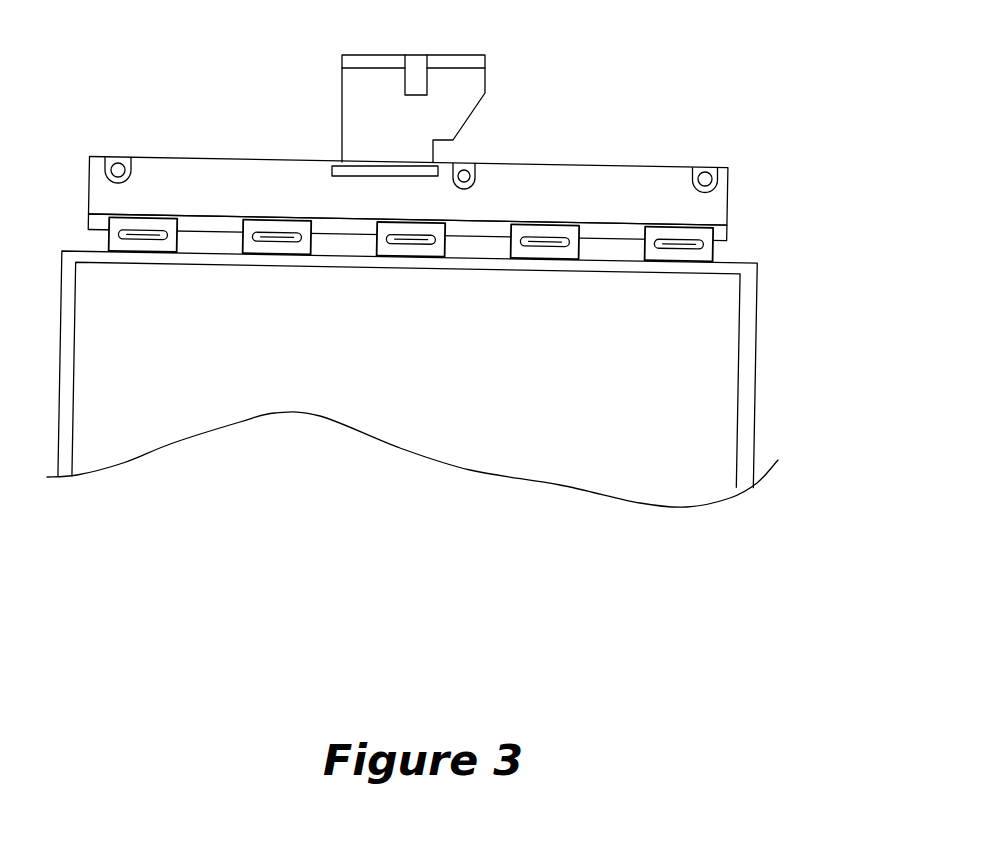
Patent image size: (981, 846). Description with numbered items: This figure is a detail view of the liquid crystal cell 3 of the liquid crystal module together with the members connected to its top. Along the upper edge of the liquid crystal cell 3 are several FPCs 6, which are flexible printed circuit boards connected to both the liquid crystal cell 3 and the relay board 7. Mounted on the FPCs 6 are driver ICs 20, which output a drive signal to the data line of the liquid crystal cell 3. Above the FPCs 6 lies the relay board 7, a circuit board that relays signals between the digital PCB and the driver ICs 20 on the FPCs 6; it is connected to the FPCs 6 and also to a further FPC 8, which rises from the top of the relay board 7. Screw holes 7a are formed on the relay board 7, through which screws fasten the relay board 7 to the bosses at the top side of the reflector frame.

The liquid crystal cell 3 is at (600, 368).
The FPC 6 is at (687, 237).
The relay board 7 is at (585, 200).
The screw hole 7a is at (114, 165).
The FPC 8 is at (412, 127).
The driver IC 20 is at (678, 245).